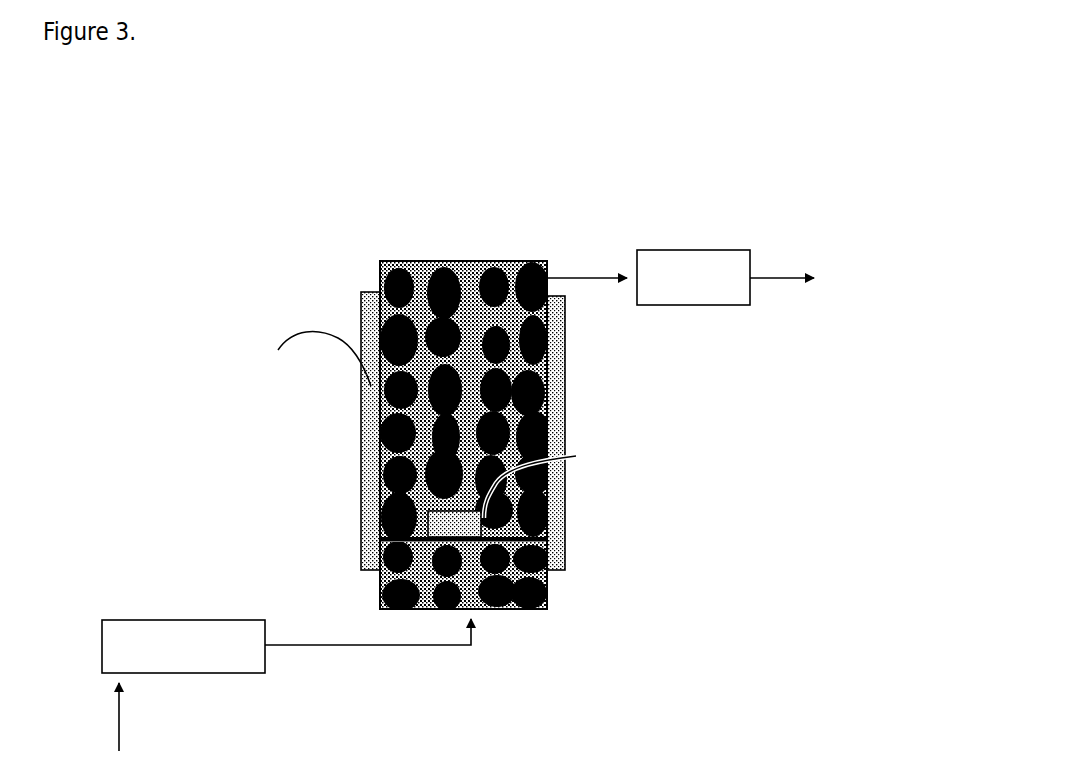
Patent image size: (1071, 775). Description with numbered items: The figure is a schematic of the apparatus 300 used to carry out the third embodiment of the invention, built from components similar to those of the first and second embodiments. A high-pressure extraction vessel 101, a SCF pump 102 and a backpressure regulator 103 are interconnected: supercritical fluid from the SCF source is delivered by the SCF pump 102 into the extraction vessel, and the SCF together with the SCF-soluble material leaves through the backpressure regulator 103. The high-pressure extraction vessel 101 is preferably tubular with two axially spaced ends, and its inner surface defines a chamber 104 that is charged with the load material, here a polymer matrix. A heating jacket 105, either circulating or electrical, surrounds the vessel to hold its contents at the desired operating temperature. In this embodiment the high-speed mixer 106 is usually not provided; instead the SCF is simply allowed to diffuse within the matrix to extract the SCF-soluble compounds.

The apparatus 300 is at (198, 171).
The high-pressure extraction vessel 101 is at (501, 601).
The SCF pump 102 is at (284, 697).
The backpressure regulator 103 is at (750, 303).
The chamber 104 is at (493, 558).
The heating jacket 105 is at (551, 356).
The high-speed mixer 106 is at (402, 522).